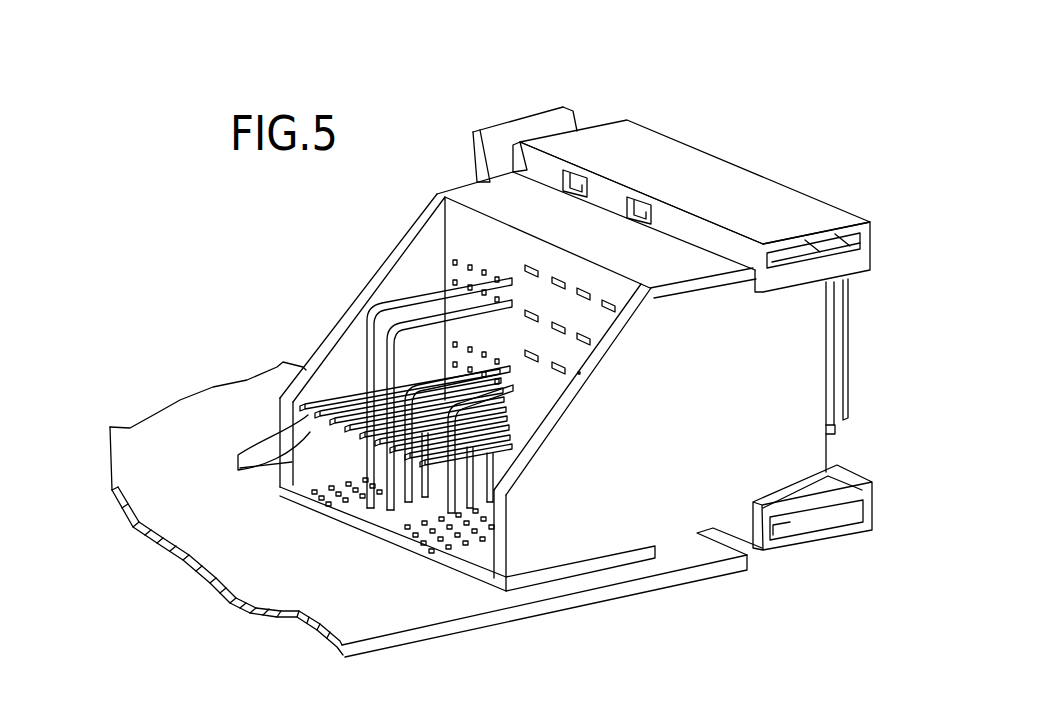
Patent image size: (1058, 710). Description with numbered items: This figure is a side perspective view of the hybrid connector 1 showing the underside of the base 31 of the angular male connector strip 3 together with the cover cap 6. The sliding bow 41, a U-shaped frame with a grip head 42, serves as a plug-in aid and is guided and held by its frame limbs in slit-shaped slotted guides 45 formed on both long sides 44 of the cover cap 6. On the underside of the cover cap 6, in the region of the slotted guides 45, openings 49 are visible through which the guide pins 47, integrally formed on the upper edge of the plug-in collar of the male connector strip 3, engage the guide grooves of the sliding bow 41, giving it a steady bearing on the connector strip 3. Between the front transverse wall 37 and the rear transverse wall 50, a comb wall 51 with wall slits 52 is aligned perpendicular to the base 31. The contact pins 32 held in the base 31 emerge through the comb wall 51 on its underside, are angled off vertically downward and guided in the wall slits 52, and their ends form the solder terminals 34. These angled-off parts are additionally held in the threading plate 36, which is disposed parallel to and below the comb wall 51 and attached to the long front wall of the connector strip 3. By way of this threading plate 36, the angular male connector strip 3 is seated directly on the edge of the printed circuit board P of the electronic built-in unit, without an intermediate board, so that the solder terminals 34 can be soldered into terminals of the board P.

The hybrid connector 1 is at (293, 247).
The angular male connector strip 3 is at (387, 232).
The cover cap 6 is at (772, 173).
The base 31 is at (457, 227).
The contact pins 32 is at (405, 328).
The solder terminals 34 is at (377, 537).
The threading plate 36 is at (428, 550).
The front transverse wall 37 is at (790, 380).
The sliding bow 41 is at (577, 110).
The grip head 42 is at (492, 150).
The long sides 44 is at (700, 183).
The slotted guides 45 is at (860, 243).
The guide pins 47 is at (647, 218).
The openings 49 is at (577, 177).
The rear transverse wall 50 is at (338, 325).
The comb wall 51 is at (527, 430).
The wall slits 52 is at (236, 471).
The printed circuit board P is at (180, 418).